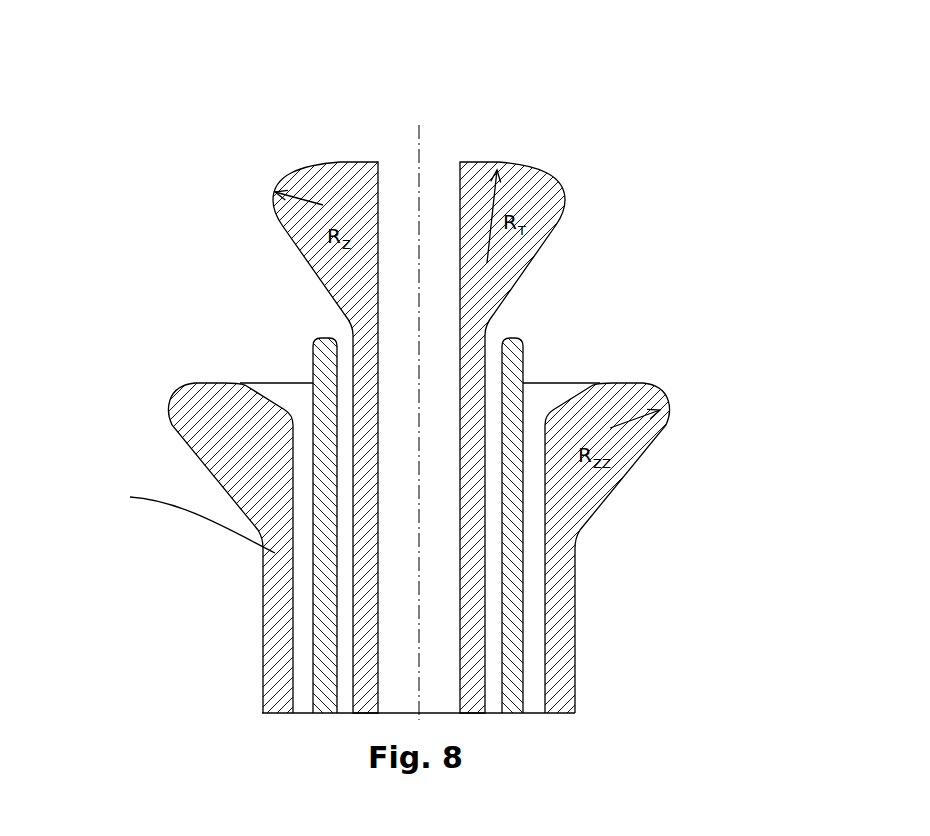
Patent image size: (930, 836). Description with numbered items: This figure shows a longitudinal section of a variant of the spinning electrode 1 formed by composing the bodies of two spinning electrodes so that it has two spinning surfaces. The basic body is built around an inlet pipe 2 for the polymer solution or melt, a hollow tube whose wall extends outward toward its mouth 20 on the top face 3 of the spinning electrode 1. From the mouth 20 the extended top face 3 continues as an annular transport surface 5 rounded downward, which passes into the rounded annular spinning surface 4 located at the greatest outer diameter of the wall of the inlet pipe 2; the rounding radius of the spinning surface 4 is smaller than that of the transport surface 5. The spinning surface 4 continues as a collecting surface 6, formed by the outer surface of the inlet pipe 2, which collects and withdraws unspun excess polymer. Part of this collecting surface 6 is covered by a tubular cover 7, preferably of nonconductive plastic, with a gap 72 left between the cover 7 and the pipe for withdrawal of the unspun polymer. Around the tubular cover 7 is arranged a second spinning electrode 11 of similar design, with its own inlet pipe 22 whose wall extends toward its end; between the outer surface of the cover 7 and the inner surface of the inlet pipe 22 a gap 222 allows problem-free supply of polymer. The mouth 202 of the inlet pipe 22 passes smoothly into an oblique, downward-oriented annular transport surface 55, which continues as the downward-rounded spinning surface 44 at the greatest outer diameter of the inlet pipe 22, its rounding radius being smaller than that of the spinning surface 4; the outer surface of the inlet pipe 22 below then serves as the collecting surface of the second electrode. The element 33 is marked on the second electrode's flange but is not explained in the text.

The spinning electrode 1 is at (238, 34).
The mouth 20 is at (385, 162).
The top face 3 is at (290, 148).
The spinning surface 4 is at (163, 190).
The collecting surface 6 is at (272, 192).
The tubular cover 7 is at (308, 270).
The transport surface 5 is at (525, 202).
The mouth of the inlet pipe of the second spinning electrode 202 is at (322, 347).
The gap 72 is at (497, 362).
The second spinning electrode 11 is at (275, 384).
The inlet pipe 2 is at (155, 405).
The inlet pipe of the second spinning electrode 22 is at (368, 488).
The gap 222 is at (303, 675).
The right flange 33 is at (633, 358).
The transport surface 55 is at (633, 388).
The spinning surface 44 is at (673, 413).